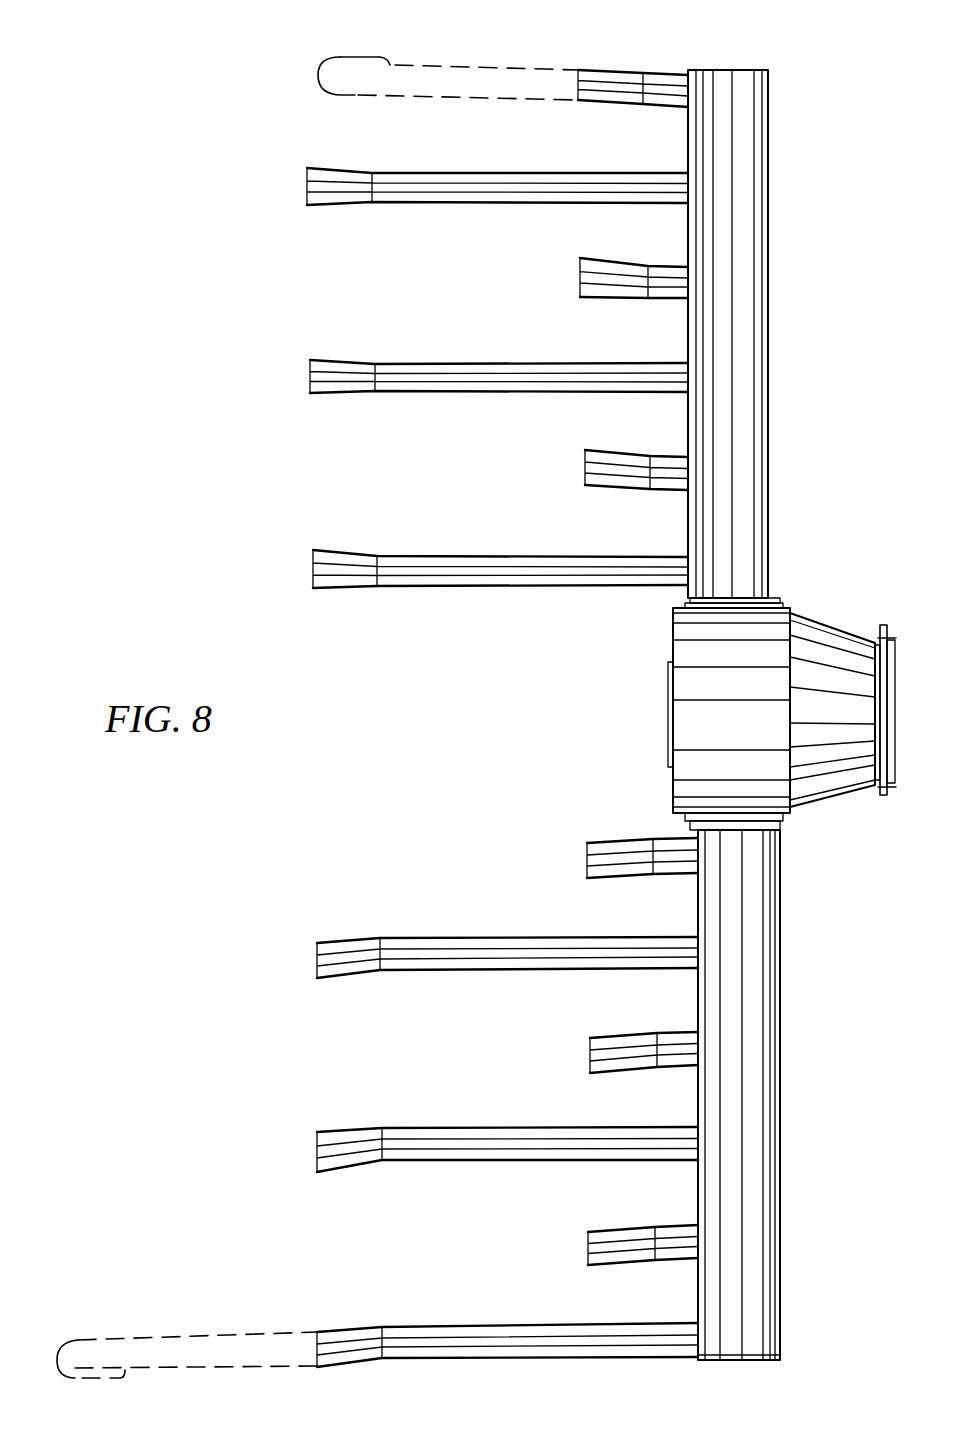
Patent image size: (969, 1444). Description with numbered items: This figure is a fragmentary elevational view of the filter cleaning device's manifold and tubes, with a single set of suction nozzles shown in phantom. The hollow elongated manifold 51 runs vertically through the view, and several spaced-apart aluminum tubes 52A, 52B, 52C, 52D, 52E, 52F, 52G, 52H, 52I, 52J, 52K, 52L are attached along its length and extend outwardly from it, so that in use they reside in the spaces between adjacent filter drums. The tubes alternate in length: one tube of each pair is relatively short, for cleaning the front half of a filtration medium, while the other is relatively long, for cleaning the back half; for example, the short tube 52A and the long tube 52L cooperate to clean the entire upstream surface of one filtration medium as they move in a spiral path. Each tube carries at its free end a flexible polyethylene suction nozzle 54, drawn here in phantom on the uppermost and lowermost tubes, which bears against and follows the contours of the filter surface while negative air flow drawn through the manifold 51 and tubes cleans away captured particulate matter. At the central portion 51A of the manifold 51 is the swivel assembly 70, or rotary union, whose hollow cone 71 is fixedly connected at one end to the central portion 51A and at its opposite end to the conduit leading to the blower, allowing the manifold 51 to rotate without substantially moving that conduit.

The manifold 51 is at (747, 83).
The central portion of the manifold 51A is at (720, 723).
The tube 52A is at (627, 72).
The tube 52B is at (672, 190).
The tube 52C is at (685, 264).
The tube 52D is at (690, 362).
The tube 52E is at (692, 463).
The tube 52F is at (692, 561).
The tube 52G is at (690, 852).
The tube 52H is at (690, 947).
The tube 52I is at (690, 1042).
The tube 52J is at (690, 1136).
The tube 52K is at (690, 1232).
The tube 52L is at (692, 1344).
The suction nozzle 54 is at (390, 80).
The swivel assembly 70 is at (898, 639).
The hollow cone 71 is at (838, 716).